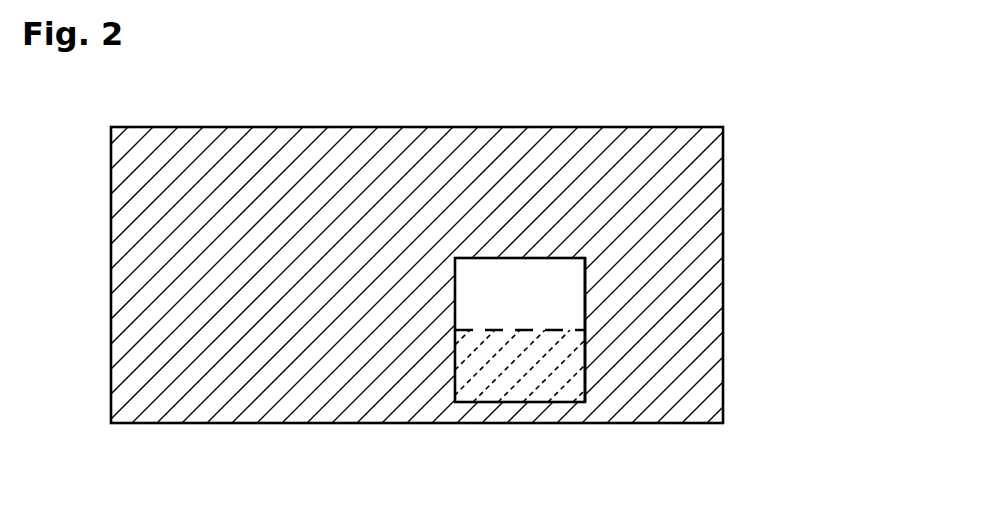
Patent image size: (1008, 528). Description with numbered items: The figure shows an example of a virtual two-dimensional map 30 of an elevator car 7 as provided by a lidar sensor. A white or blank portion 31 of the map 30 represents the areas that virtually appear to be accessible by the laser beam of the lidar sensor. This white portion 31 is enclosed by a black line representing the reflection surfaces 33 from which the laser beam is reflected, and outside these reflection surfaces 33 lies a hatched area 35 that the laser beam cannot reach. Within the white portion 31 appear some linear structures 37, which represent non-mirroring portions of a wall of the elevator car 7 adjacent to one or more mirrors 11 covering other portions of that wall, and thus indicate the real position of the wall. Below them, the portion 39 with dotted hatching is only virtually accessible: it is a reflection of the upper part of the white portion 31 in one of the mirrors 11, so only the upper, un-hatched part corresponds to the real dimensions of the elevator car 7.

The virtual 2-dimensional map 30 is at (730, 97).
The hatched area 35 is at (710, 177).
The white portion 31 is at (563, 282).
The reflection surfaces 33 is at (585, 302).
The linear structures 37 is at (562, 313).
The portion with dotted hatching 39 is at (490, 362).
The mirror 11 is at (552, 333).
The elevator car 7 is at (494, 251).